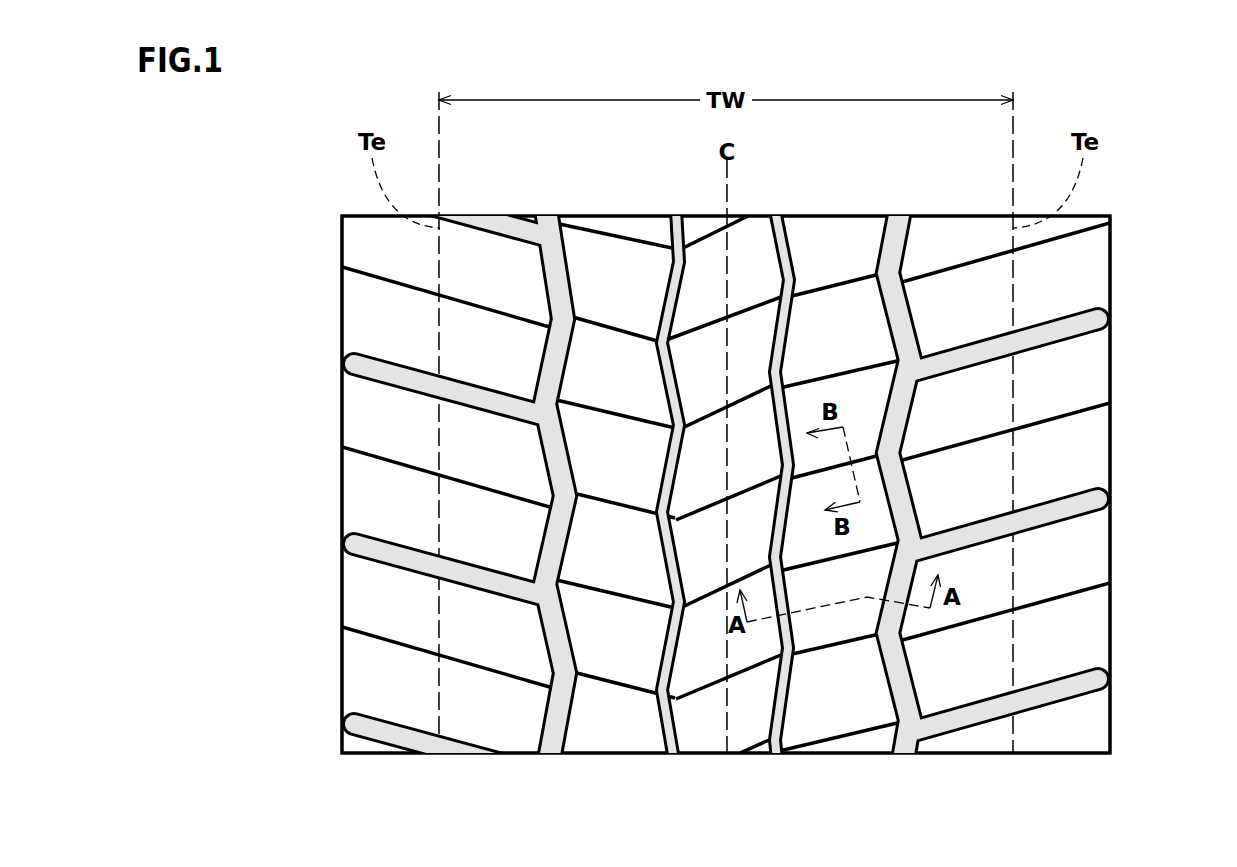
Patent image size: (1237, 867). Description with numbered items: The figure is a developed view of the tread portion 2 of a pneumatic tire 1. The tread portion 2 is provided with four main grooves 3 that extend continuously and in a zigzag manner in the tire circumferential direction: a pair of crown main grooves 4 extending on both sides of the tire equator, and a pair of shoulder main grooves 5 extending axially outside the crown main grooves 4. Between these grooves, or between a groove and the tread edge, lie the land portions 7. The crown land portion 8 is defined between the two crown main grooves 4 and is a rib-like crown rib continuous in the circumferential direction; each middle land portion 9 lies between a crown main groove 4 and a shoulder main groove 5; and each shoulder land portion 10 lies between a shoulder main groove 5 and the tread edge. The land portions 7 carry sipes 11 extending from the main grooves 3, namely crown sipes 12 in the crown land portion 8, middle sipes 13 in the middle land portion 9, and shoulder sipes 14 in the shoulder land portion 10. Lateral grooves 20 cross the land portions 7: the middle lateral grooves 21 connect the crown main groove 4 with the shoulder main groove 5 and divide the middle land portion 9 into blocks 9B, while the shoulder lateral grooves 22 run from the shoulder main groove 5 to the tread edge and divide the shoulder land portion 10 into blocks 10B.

The pneumatic tire 1 is at (1098, 200).
The tread portion 2 is at (726, 484).
The main grooves 3 is at (783, 170).
The crown main groove 4 is at (677, 237).
The shoulder main groove 5 is at (548, 247).
The land portions 7 is at (756, 806).
The crown land portion 8 is at (748, 729).
The middle land portion 9 is at (843, 745).
The blocks 9B is at (598, 257).
The shoulder land portion 10 is at (986, 740).
The blocks 10B is at (508, 268).
The sipes 11 is at (715, 806).
The crown sipes 12 is at (707, 683).
The middle sipes 13 is at (617, 593).
The shoulder sipes 14 is at (501, 670).
The lateral grooves 20 is at (248, 433).
The middle lateral grooves 21 is at (610, 495).
The shoulder lateral grooves 22 is at (473, 573).